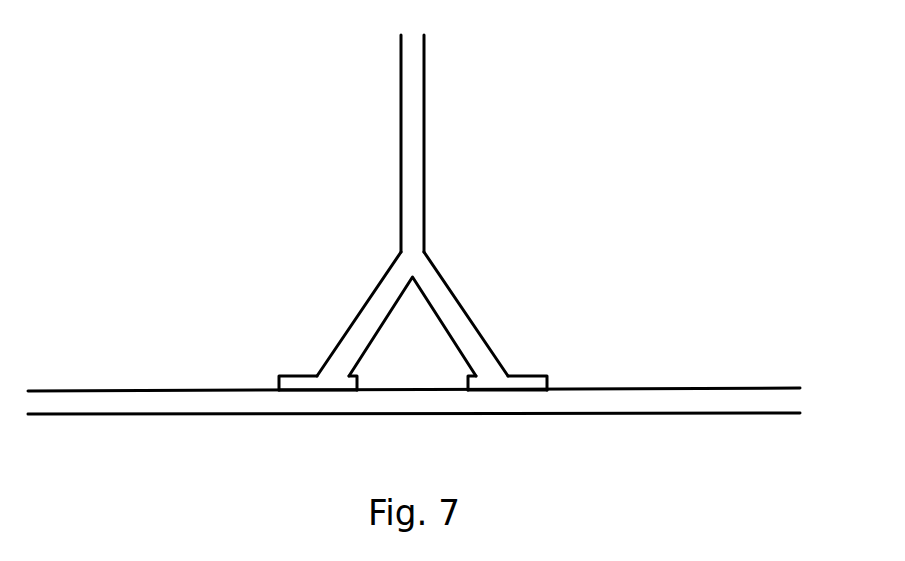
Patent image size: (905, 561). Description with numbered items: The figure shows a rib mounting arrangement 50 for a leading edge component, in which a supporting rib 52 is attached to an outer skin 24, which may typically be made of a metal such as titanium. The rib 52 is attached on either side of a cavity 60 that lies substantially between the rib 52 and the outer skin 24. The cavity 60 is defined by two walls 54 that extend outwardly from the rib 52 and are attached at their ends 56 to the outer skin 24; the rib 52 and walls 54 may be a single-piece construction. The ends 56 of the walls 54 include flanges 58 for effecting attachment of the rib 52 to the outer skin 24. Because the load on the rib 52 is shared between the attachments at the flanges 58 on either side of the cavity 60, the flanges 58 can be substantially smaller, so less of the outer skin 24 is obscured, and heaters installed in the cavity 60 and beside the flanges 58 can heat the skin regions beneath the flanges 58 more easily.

The outer skin 24 is at (135, 402).
The stiffener assembly 50 is at (415, 261).
The supporting rib 52 is at (417, 140).
The walls 54 is at (363, 325).
The ends 56 is at (318, 375).
The flanges 58 is at (313, 382).
The cavity 60 is at (407, 320).